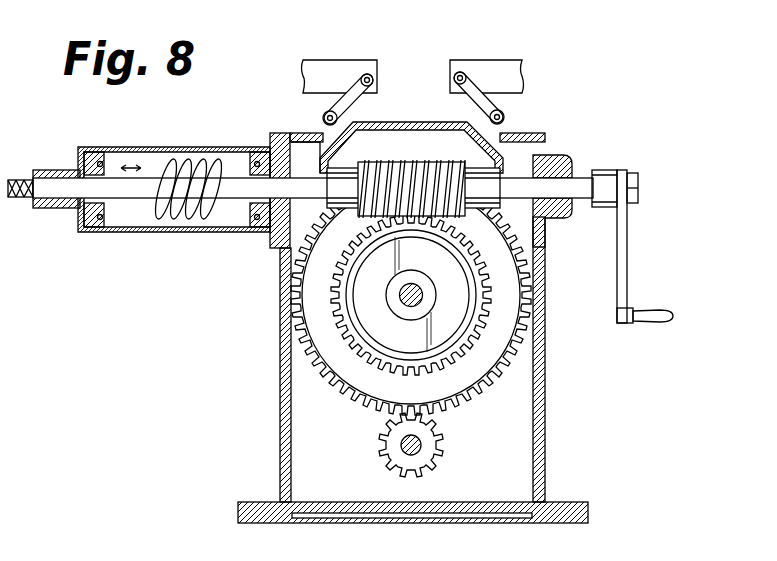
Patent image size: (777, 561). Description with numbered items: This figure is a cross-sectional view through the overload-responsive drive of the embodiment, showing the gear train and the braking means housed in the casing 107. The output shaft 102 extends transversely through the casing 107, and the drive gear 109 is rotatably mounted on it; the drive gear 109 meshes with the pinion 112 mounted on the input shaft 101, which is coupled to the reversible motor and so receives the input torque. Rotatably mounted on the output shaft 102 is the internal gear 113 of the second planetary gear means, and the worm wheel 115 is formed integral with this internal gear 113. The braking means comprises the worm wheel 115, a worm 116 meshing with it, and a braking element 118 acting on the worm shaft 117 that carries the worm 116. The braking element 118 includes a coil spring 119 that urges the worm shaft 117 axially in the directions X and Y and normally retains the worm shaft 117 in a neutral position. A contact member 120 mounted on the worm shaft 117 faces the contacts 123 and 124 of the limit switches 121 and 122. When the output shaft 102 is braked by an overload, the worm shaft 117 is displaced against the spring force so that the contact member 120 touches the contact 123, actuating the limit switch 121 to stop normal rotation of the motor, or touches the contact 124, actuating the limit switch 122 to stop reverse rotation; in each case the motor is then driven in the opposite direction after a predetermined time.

The input shaft 101 is at (421, 445).
The output shaft 102 is at (411, 307).
The casing 107 is at (545, 372).
The drive gear 109 is at (490, 388).
The pinion 112 is at (392, 465).
The internal gear 113 is at (358, 407).
The worm wheel 115 is at (358, 350).
The worm 116 is at (418, 160).
The worm shaft 117 is at (543, 156).
The braking element 118 is at (215, 138).
The coil spring 119 is at (163, 158).
The contact member 120 is at (392, 120).
The limit switch 121 is at (478, 68).
The limit switch 122 is at (346, 68).
The contact 123 is at (504, 117).
The contact 124 is at (323, 117).